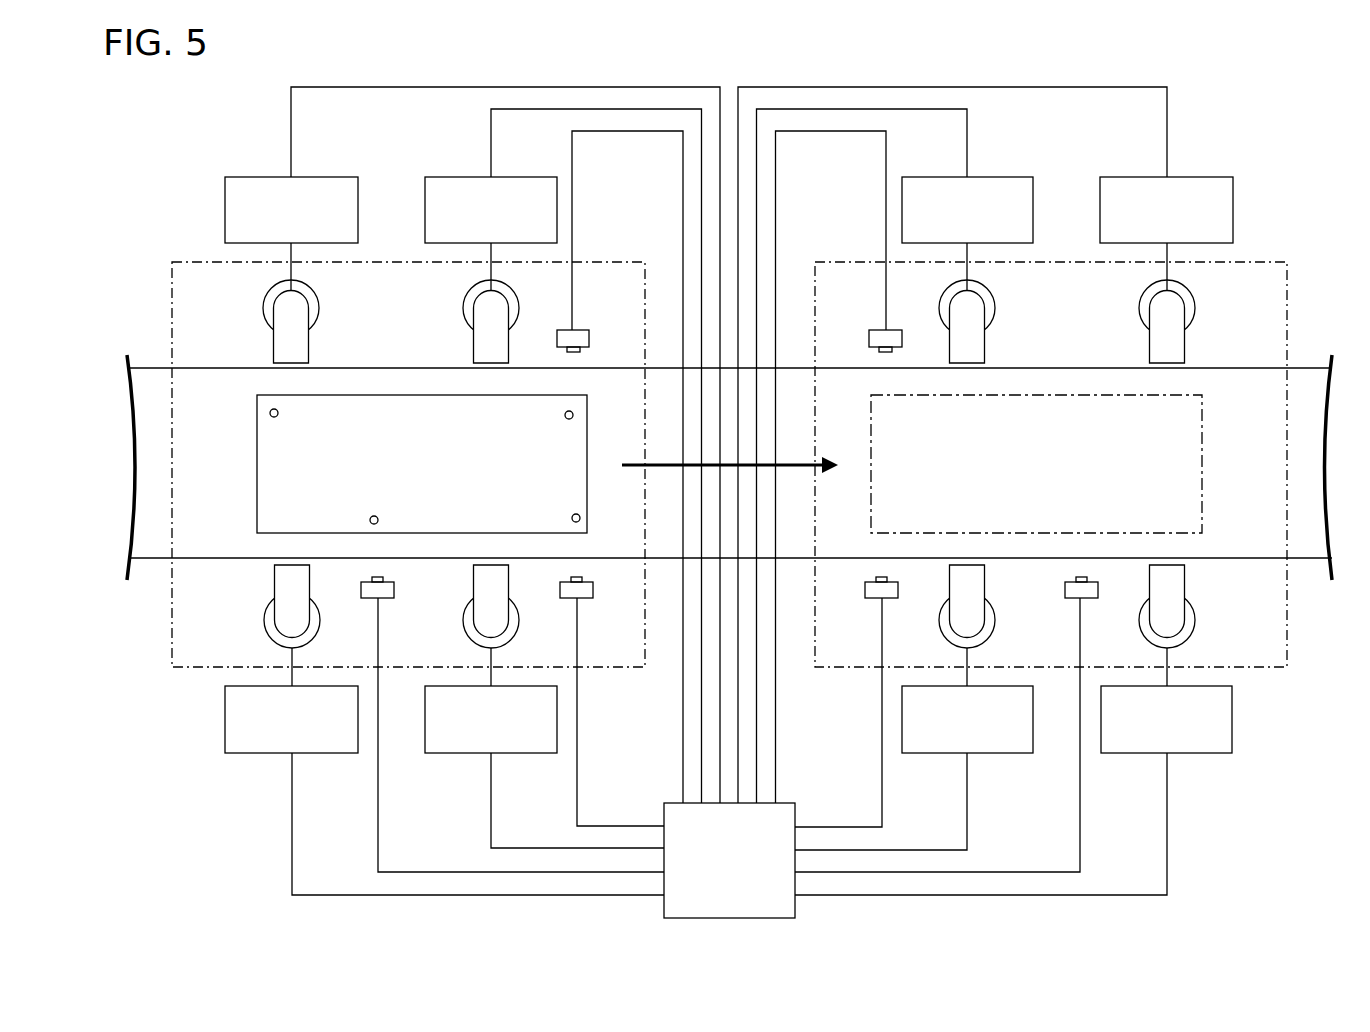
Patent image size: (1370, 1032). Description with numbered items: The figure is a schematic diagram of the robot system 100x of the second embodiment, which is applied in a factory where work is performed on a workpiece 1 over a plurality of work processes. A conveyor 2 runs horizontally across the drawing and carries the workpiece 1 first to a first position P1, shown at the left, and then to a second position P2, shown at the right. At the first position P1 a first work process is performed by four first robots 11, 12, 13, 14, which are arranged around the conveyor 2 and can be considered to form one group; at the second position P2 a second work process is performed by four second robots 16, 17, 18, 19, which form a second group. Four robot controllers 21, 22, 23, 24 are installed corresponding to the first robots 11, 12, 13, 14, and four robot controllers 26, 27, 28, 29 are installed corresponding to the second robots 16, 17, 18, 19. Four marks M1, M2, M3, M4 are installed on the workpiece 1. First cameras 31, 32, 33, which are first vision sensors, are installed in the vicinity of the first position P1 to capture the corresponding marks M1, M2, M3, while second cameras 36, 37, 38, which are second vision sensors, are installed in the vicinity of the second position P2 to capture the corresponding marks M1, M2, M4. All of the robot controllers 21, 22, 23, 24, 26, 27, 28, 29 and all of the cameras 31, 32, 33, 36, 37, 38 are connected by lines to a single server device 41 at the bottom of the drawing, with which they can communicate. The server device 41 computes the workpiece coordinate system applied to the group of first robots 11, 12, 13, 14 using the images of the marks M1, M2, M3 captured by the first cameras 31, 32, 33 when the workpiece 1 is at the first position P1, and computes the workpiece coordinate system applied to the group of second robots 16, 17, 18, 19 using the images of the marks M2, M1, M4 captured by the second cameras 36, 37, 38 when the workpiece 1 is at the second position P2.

The robot system 100x is at (160, 160).
The workpiece 1 is at (270, 457).
The conveyor 2 is at (190, 367).
The first robot 11 is at (515, 630).
The first robot 12 is at (307, 635).
The first robot 13 is at (507, 287).
The first robot 14 is at (307, 287).
The second robot 16 is at (950, 632).
The second robot 17 is at (1152, 632).
The second robot 18 is at (958, 287).
The second robot 19 is at (1160, 287).
The robot controller 21 is at (518, 753).
The robot controller 22 is at (320, 753).
The robot controller 23 is at (520, 175).
The robot controller 24 is at (318, 175).
The robot controller 26 is at (940, 753).
The robot controller 27 is at (1140, 753).
The robot controller 28 is at (938, 175).
The robot controller 29 is at (1138, 175).
The first camera 31 is at (585, 597).
The first camera 32 is at (388, 598).
The first camera 33 is at (577, 330).
The second camera 36 is at (873, 592).
The second camera 37 is at (1070, 597).
The second camera 38 is at (882, 332).
The server device 41 is at (662, 815).
The first position P1 is at (396, 388).
The second position P2 is at (1056, 390).
The mark M1 is at (572, 514).
The mark M2 is at (374, 516).
The mark M3 is at (565, 418).
The mark M4 is at (278, 415).